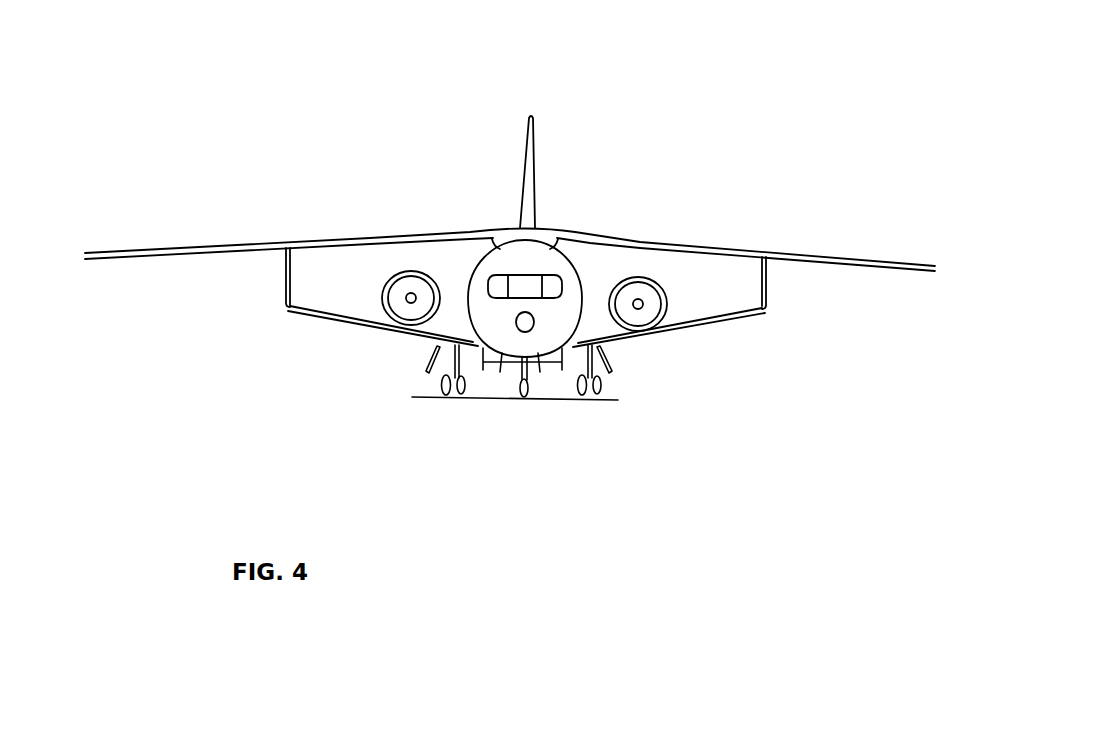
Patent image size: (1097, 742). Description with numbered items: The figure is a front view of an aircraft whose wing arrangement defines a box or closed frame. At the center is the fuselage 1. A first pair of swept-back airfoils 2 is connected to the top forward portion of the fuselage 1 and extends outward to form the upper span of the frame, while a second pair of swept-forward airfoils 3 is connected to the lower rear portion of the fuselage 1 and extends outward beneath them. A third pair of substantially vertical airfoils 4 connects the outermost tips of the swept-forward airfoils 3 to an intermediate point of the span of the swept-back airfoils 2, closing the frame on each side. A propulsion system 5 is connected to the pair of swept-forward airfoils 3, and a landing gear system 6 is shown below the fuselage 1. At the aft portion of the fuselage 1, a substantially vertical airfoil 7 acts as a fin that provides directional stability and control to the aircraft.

The fuselage 1 is at (563, 320).
The first pair of swept-back airfoils 2 is at (607, 243).
The second pair of swept-forward airfoils 3 is at (337, 317).
The third pair of substantially vertical airfoils 4 is at (287, 277).
The propulsion system 5 is at (646, 292).
The landing gear system 6 is at (457, 397).
The substantially vertical airfoil 7 is at (533, 130).